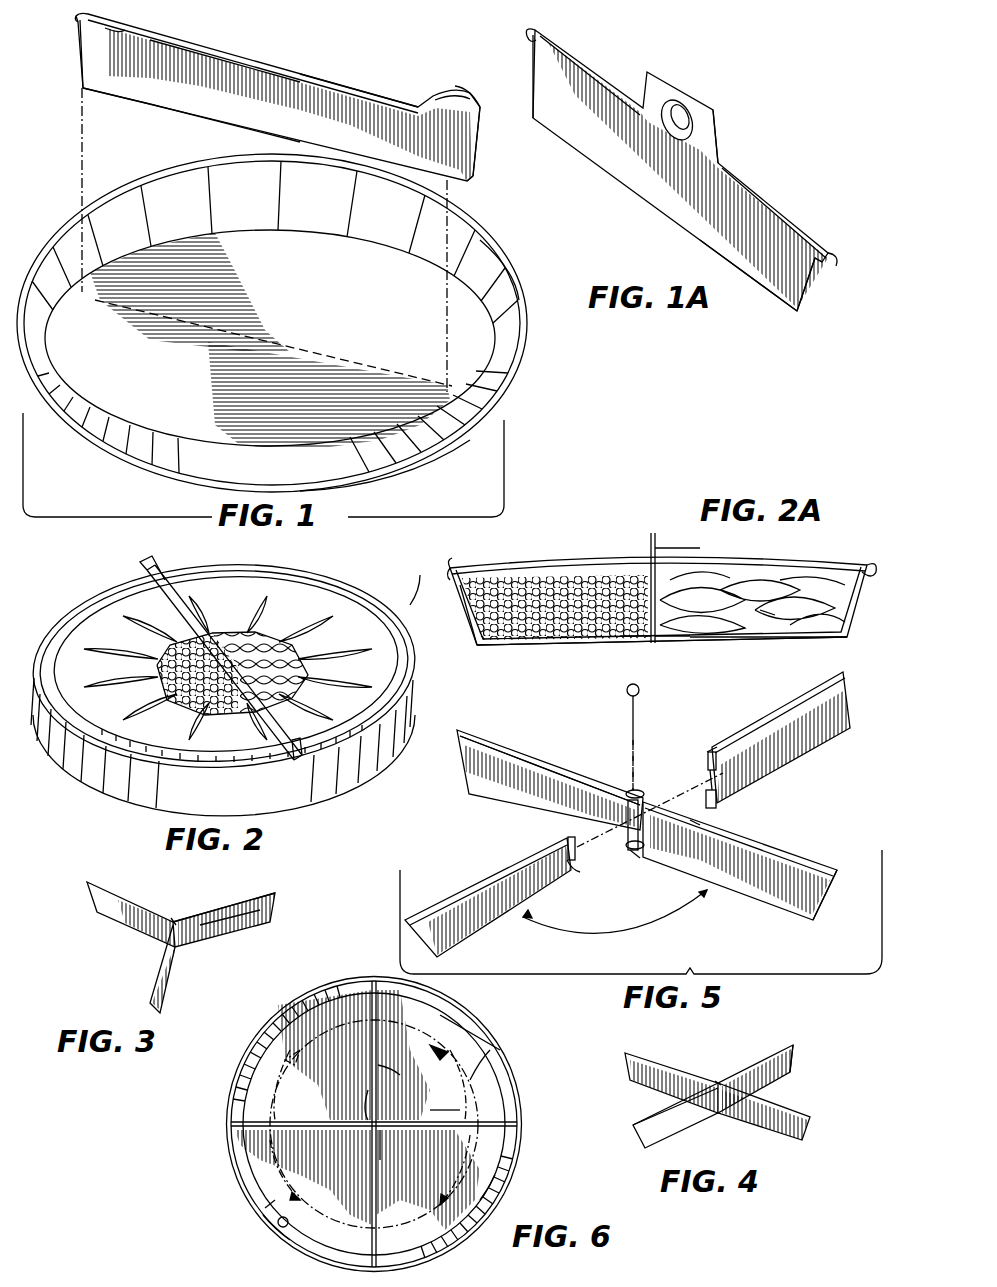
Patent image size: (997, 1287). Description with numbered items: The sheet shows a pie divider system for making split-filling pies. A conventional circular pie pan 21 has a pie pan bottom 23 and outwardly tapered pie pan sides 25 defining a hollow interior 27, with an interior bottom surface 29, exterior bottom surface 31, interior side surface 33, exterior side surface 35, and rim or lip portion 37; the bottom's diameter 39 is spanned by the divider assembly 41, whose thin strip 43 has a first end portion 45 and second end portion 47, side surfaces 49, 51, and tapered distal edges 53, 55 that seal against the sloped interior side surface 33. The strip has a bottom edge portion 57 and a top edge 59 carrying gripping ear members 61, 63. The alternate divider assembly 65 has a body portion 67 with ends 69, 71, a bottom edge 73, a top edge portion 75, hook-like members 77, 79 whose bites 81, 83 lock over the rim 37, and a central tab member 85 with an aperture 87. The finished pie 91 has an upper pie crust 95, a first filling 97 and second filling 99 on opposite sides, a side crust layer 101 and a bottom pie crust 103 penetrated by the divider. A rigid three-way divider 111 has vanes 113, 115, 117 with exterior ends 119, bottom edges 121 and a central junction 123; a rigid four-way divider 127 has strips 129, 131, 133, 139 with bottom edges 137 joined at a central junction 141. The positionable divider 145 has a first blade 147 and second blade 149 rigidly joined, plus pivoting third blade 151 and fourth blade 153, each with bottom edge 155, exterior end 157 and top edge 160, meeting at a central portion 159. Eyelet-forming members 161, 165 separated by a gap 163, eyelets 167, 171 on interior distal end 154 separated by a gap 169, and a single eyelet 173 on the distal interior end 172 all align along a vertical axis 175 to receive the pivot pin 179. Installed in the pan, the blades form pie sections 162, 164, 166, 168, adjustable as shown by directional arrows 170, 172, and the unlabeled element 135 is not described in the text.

In FIG. 1, the circular pie pan 21 is at (48, 230).
In FIG. 6, the circular pie pan 21 is at (528, 1122).
In FIG. 1, the pie pan bottom 23 is at (270, 339).
In FIG. 6, the pie pan bottom 23 is at (303, 1181).
In FIG. 1, the pie pan sides 25 is at (122, 446).
In FIG. 2A, the pie pan sides 25 is at (870, 565).
In FIG. 1, the hollow interior 27 is at (62, 292).
In FIG. 6, the hollow interior 27 is at (337, 1002).
In FIG. 1, the interior bottom surface 29 is at (190, 298).
In FIG. 2A, the interior bottom surface 29 is at (768, 606).
In FIG. 1, the exterior bottom surface 31 is at (400, 465).
In FIG. 2A, the exterior bottom surface 31 is at (715, 638).
In FIG. 1, the interior side surface 33 is at (505, 262).
In FIG. 2A, the interior side surface 33 is at (472, 638).
In FIG. 6, the interior side surface 33 is at (278, 1228).
In FIG. 1, the exterior side surface 35 is at (500, 390).
In FIG. 6, the exterior side surface 35 is at (505, 1192).
In FIG. 1, the upper rim or lip portion 37 is at (518, 295).
In FIG. 2, the upper rim or lip portion 37 is at (418, 579).
In FIG. 2A, the upper rim or lip portion 37 is at (447, 580).
In FIG. 6, the upper rim or lip portion 37 is at (510, 1082).
In FIG. 1, the diameter of the circular bottom 39 is at (300, 322).
In FIG. 1, the divider assembly 41 is at (312, 65).
In FIG. 2, the divider assembly 41 is at (180, 590).
In FIG. 2A, the divider assembly 41 is at (642, 530).
In FIG. 6, the divider assembly 41 is at (218, 1116).
In FIG. 1, the body portion or strip 43 is at (300, 115).
In FIG. 1, the first end portion 45 is at (98, 58).
In FIG. 1, the second end portion 47 is at (476, 122).
In FIG. 1, the first divider side surface 49 is at (388, 150).
In FIG. 2A, the first divider side surface 49 is at (645, 638).
In FIG. 1, the second divider side surface 51 is at (398, 95).
In FIG. 2A, the second divider side surface 51 is at (668, 568).
In FIG. 1, the distal edge of the first end portion 53 is at (78, 26).
In FIG. 1, the distal end of the second end portion 55 is at (473, 155).
In FIG. 1, the bottom edge portion 57 is at (130, 99).
In FIG. 2A, the bottom edge portion 57 is at (655, 640).
In FIG. 1, the top edge 59 is at (245, 62).
In FIG. 1, the first ear member 61 is at (128, 30).
In FIG. 2, the first ear member 61 is at (166, 568).
In FIG. 1, the second ear member 63 is at (462, 110).
In FIG. 2, the second ear member 63 is at (303, 752).
In FIG. 1A, the divider assembly 65 is at (770, 153).
In FIG. 1A, the body portion 67 is at (690, 218).
In FIG. 1A, the first edge or end 69 is at (533, 85).
In FIG. 1A, the second edge or end portion 71 is at (813, 298).
In FIG. 1A, the bottom edge 73 is at (780, 298).
In FIG. 1A, the top edge portion 75 is at (795, 218).
In FIG. 1A, the first hook-like member 77 is at (550, 34).
In FIG. 1A, the second hook-like member 79 is at (834, 250).
In FIG. 1A, the bite of the first hook-like member 81 is at (527, 48).
In FIG. 1A, the bite of the second hook-like member 83 is at (818, 268).
In FIG. 1A, the central tab member 85 is at (718, 128).
In FIG. 1A, the central aperture 87 is at (674, 100).
In FIG. 2, the split-filling pie 91 is at (145, 795).
In FIG. 2A, the split-filling pie 91 is at (575, 535).
In FIG. 2, the upper pie crust 95 is at (342, 640).
In FIG. 2A, the upper pie crust 95 is at (522, 565).
In FIG. 2, the first fruit filling 97 is at (258, 668).
In FIG. 2A, the first fruit filling 97 is at (752, 602).
In FIG. 2, the second pie filling material 99 is at (178, 660).
In FIG. 2A, the second pie filling material 99 is at (555, 607).
In FIG. 2A, the crust layer on the sides 101 is at (470, 565).
In FIG. 2A, the bottom pie crust 103 is at (780, 638).
In FIG. 3, the three-way pie pan divider 111 is at (170, 888).
In FIG. 3, the first vane 113 is at (118, 908).
In FIG. 3, the second vane 115 is at (268, 915).
In FIG. 3, the third vane 117 is at (165, 985).
In FIG. 3, the exterior ends 119 is at (275, 898).
In FIG. 3, the bottom edge 121 is at (210, 935).
In FIG. 3, the central junction 123 is at (176, 915).
In FIG. 4, the four-way pie divider apparatus 127 is at (733, 1060).
In FIG. 4, the blade or strip 129 is at (790, 1050).
In FIG. 4, the blade or strip 131 is at (780, 1135).
In FIG. 4, the blade or strip 133 is at (650, 1150).
In FIG. 4, the blade 135 is at (660, 1058).
In FIG. 4, the bottom edge 137 is at (700, 1118).
In FIG. 4, the blade or strip 139 is at (795, 1057).
In FIG. 4, the central junction 141 is at (716, 1078).
In FIG. 5, the selectively-positionable pie divider 145 is at (600, 758).
In FIG. 5, the first blade 147 is at (510, 785).
In FIG. 6, the first blade 147 is at (380, 1040).
In FIG. 5, the second blade 149 is at (798, 870).
In FIG. 6, the second blade 149 is at (405, 1195).
In FIG. 5, the third blade 151 is at (485, 912).
In FIG. 6, the third blade 151 is at (330, 1100).
In FIG. 5, the fourth blade 153 is at (800, 750).
In FIG. 6, the fourth blade 153 is at (423, 1125).
In FIG. 5, the interior distal end 154 is at (722, 760).
In FIG. 5, the bottom edge 155 is at (755, 775).
In FIG. 5, the exterior end 157 is at (820, 912).
In FIG. 5, the central portion 159 is at (695, 718).
In FIG. 6, the central portion 159 is at (368, 1115).
In FIG. 5, the top edge 160 is at (538, 748).
In FIG. 5, the top eyelet-forming member 161 is at (622, 795).
In FIG. 6, the top eyelet-forming member 161 is at (399, 1145).
In FIG. 6, the pie section 162 is at (305, 1005).
In FIG. 5, the gap 163 is at (630, 848).
In FIG. 6, the pie section 164 is at (266, 1215).
In FIG. 5, the bottom eyelet-forming member 165 is at (628, 857).
In FIG. 6, the pie section 166 is at (455, 1235).
In FIG. 5, the third eyelet-forming element 167 is at (706, 758).
In FIG. 6, the pie section 168 is at (440, 1022).
In FIG. 5, the gap 169 is at (723, 773).
In FIG. 6, the directional arrow 170 is at (256, 1088).
In FIG. 5, the lower eyelet-forming element 171 is at (718, 800).
In FIG. 5, the distal interior end 172 is at (572, 875).
In FIG. 6, the distal interior end 172 is at (475, 1055).
In FIG. 5, the single eyelet-forming element 173 is at (566, 840).
In FIG. 5, the vertical axis 175 is at (640, 748).
In FIG. 5, the pivot pin 179 is at (630, 928).
In FIG. 6, the pivot pin 179 is at (367, 1130).